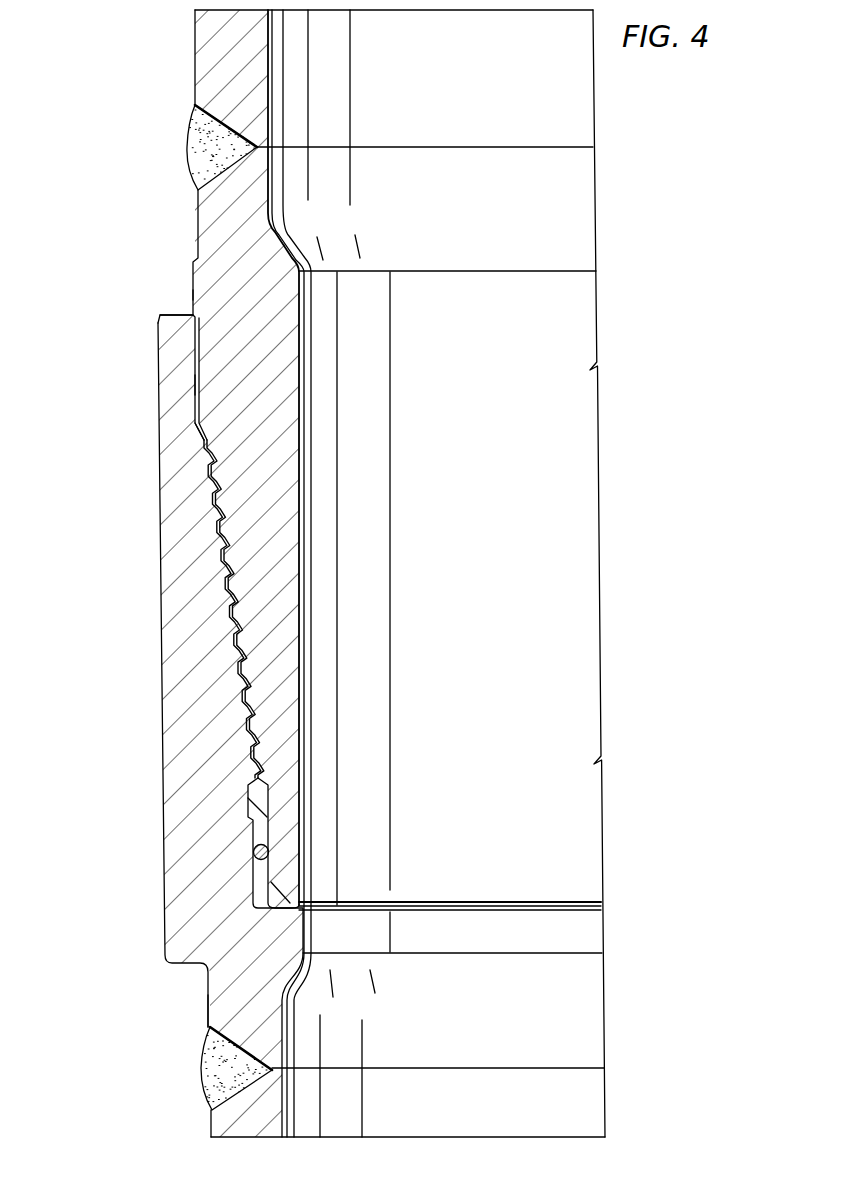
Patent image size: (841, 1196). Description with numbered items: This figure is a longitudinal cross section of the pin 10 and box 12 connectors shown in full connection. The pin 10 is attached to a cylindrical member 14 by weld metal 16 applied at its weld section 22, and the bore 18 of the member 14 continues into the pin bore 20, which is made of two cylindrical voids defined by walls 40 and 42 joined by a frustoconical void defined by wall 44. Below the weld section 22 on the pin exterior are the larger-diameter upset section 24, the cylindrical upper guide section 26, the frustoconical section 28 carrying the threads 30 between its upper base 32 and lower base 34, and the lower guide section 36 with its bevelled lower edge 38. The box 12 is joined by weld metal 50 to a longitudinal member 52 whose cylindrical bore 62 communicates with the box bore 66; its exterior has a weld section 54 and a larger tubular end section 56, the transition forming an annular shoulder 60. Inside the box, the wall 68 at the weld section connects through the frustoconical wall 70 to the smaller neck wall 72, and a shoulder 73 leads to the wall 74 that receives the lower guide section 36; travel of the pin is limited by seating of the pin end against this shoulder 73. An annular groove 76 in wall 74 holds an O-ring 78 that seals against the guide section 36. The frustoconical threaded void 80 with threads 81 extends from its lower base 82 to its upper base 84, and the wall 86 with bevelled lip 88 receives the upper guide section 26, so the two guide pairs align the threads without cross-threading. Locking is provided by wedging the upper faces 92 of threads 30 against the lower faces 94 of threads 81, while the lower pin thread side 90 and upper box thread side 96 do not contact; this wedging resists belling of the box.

The pin 10 is at (118, 192).
The box 12 is at (97, 1026).
The cylindrical member 14 is at (195, 43).
The weld metal 16 is at (190, 140).
The bore 18 is at (489, 88).
The bore 20 is at (520, 505).
The weld section 22 is at (195, 233).
The upset section 24 is at (193, 296).
The upper guide section 26 is at (203, 368).
The frustoconical section 28 is at (237, 612).
The threads 30 is at (232, 623).
The upper base 32 is at (212, 441).
The lower base 34 is at (257, 773).
The lower guide section 36 is at (270, 811).
The bevelled lower edge 38 is at (295, 887).
The wall 40 is at (302, 505).
The wall 42 is at (273, 178).
The wall 44 is at (284, 248).
The weld metal 50 is at (203, 1072).
The longitudinal member 52 is at (211, 1120).
The weld section 54 is at (208, 1012).
The end section 56 is at (163, 723).
The annular shoulder 60 is at (168, 960).
The cylindrical bore 62 is at (510, 1119).
The bore 66 is at (520, 946).
The wall 68 is at (284, 1033).
The wall 70 is at (295, 975).
The wall 72 is at (307, 932).
The shoulder 73 is at (270, 915).
The wall 74 is at (268, 892).
The annular groove 76 is at (253, 860).
The O-ring sealing member 78 is at (268, 848).
The frustoconical void 80 is at (223, 676).
The threads 81 is at (219, 630).
The lower base 82 is at (250, 810).
The upper base 84 is at (201, 438).
The wall 86 is at (196, 385).
The bevelled lip 88 is at (185, 331).
The lower side 90 is at (241, 684).
The upper thread side 92 is at (250, 737).
The lower side 94 is at (219, 557).
The upper thread side 96 is at (219, 580).